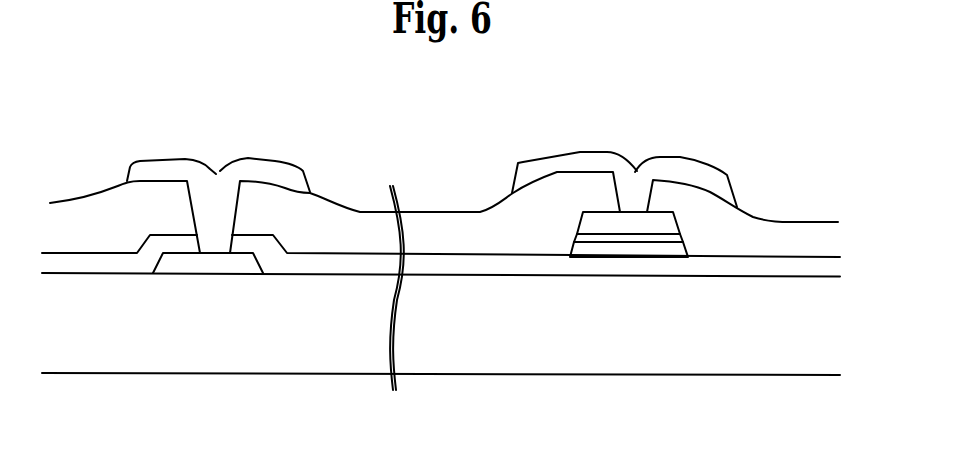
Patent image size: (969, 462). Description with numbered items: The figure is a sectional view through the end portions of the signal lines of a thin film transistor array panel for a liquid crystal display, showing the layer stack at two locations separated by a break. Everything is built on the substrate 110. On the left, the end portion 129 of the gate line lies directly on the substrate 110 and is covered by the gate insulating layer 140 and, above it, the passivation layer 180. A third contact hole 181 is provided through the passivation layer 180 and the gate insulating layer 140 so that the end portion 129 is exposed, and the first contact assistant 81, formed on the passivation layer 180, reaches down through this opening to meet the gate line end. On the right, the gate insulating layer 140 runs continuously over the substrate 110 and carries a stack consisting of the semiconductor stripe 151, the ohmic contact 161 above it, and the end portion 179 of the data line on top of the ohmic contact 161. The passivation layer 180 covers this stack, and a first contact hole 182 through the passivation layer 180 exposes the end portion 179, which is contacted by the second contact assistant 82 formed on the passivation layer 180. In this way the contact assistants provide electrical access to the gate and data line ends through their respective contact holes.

The substrate 110 is at (148, 363).
The end portion 129 is at (208, 265).
The gate insulating layer 140 is at (288, 265).
The semiconductor stripe 151 is at (587, 250).
The ohmic contact 161 is at (623, 238).
The end portion 179 is at (658, 228).
The passivation layer 180 is at (487, 237).
The third contact hole 181 is at (235, 198).
The first contact hole 182 is at (645, 201).
The first contact assistant 81 is at (270, 161).
The second contact assistant 82 is at (686, 161).